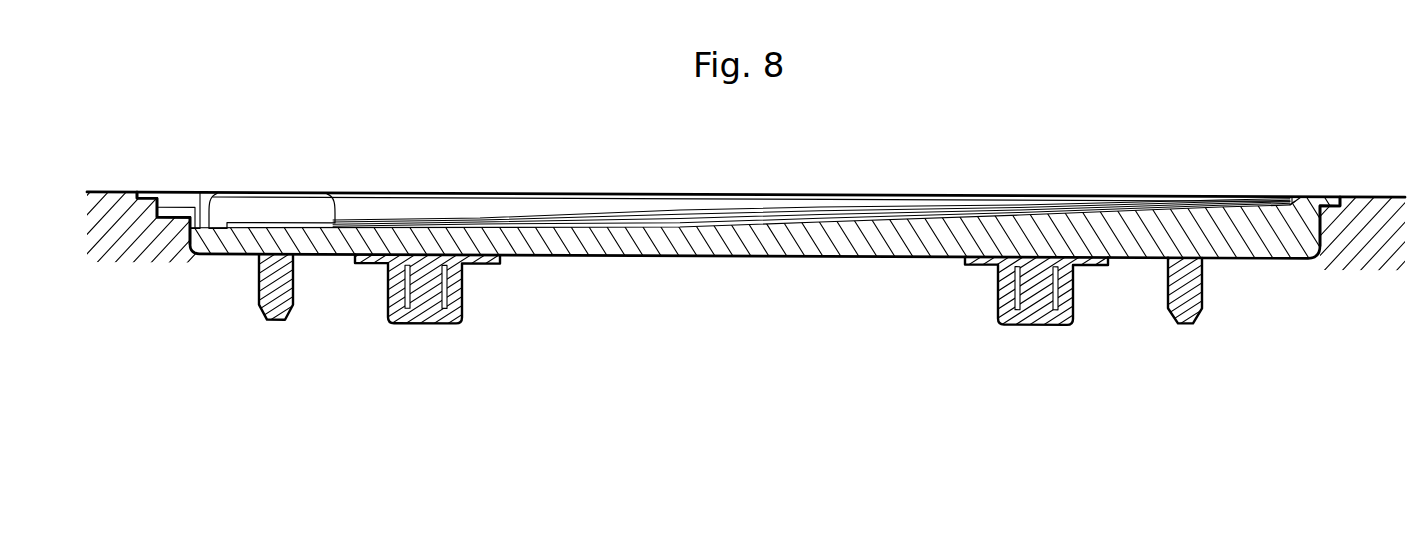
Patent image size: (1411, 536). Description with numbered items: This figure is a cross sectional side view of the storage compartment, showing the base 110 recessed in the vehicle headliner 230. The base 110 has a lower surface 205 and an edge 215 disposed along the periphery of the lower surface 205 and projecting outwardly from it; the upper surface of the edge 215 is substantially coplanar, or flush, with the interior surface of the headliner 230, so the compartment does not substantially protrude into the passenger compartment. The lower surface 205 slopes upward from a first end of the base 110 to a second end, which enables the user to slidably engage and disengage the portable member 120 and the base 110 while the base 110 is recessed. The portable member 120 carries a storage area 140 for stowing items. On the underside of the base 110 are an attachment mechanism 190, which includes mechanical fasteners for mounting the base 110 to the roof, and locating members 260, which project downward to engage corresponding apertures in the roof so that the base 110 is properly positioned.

The base 110 is at (727, 255).
The portable member 120 is at (733, 192).
The storage area 140 is at (330, 195).
The attachment mechanism 190 is at (423, 323).
The lower surface 205 is at (218, 191).
The edge 215 is at (148, 191).
The headliner 230 is at (107, 191).
The locating members 260 is at (276, 321).